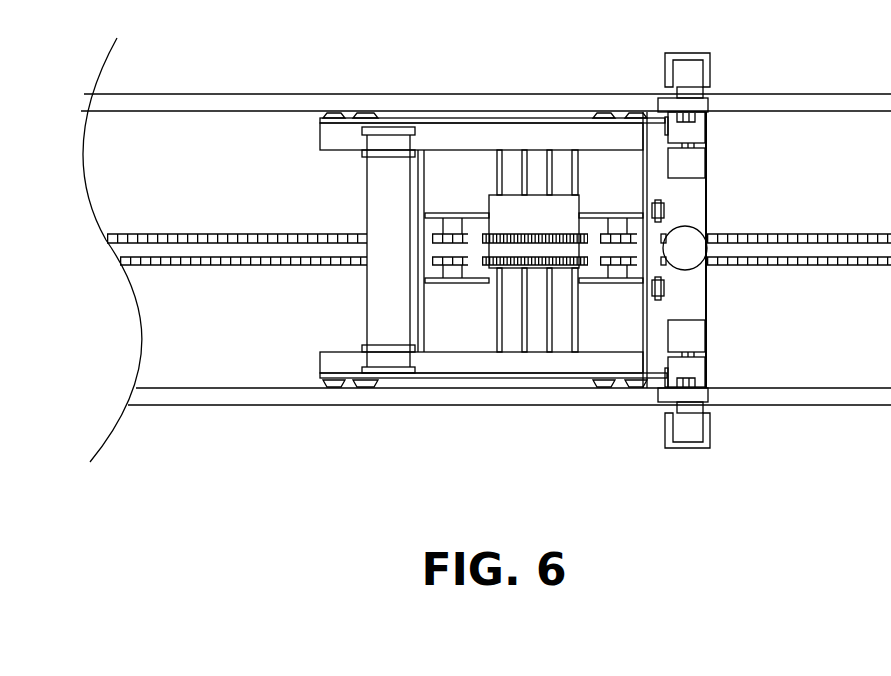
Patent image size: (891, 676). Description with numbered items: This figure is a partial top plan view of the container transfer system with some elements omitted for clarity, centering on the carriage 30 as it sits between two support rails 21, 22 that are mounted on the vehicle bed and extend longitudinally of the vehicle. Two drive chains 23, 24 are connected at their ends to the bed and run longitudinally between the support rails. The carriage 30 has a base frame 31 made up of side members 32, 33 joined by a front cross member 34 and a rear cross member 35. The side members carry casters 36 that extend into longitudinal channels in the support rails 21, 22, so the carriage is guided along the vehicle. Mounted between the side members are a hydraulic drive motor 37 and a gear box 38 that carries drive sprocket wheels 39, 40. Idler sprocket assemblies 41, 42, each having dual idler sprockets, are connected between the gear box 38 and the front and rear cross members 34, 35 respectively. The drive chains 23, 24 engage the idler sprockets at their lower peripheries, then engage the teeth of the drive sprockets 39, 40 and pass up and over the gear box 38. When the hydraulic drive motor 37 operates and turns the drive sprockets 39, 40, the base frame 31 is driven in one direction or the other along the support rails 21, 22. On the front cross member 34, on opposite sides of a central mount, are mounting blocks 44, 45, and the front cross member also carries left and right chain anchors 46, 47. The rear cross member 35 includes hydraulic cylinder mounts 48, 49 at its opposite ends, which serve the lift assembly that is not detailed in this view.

The support rail 21 is at (212, 396).
The support rail 22 is at (210, 98).
The drive chain 23 is at (222, 263).
The drive chain 24 is at (228, 237).
The carriage 30 is at (482, 227).
The base frame 31 is at (567, 127).
The side member 32 is at (475, 362).
The side member 33 is at (468, 127).
The front cross member 34 is at (698, 192).
The rear cross member 35 is at (424, 185).
The casters 36 is at (337, 113).
The hydraulic drive motor 37 is at (565, 176).
The gear box 38 is at (562, 211).
The drive sprocket wheel 39 is at (558, 264).
The drive sprocket wheel 40 is at (530, 238).
The idler sprocket assembly 41 is at (632, 284).
The idler sprocket assembly 42 is at (468, 284).
The mounting block 44 is at (697, 341).
The mounting block 45 is at (690, 160).
The chain anchor 46 is at (664, 290).
The chain anchor 47 is at (664, 211).
The hydraulic cylinder mount 48 is at (371, 358).
The hydraulic cylinder mount 49 is at (375, 140).